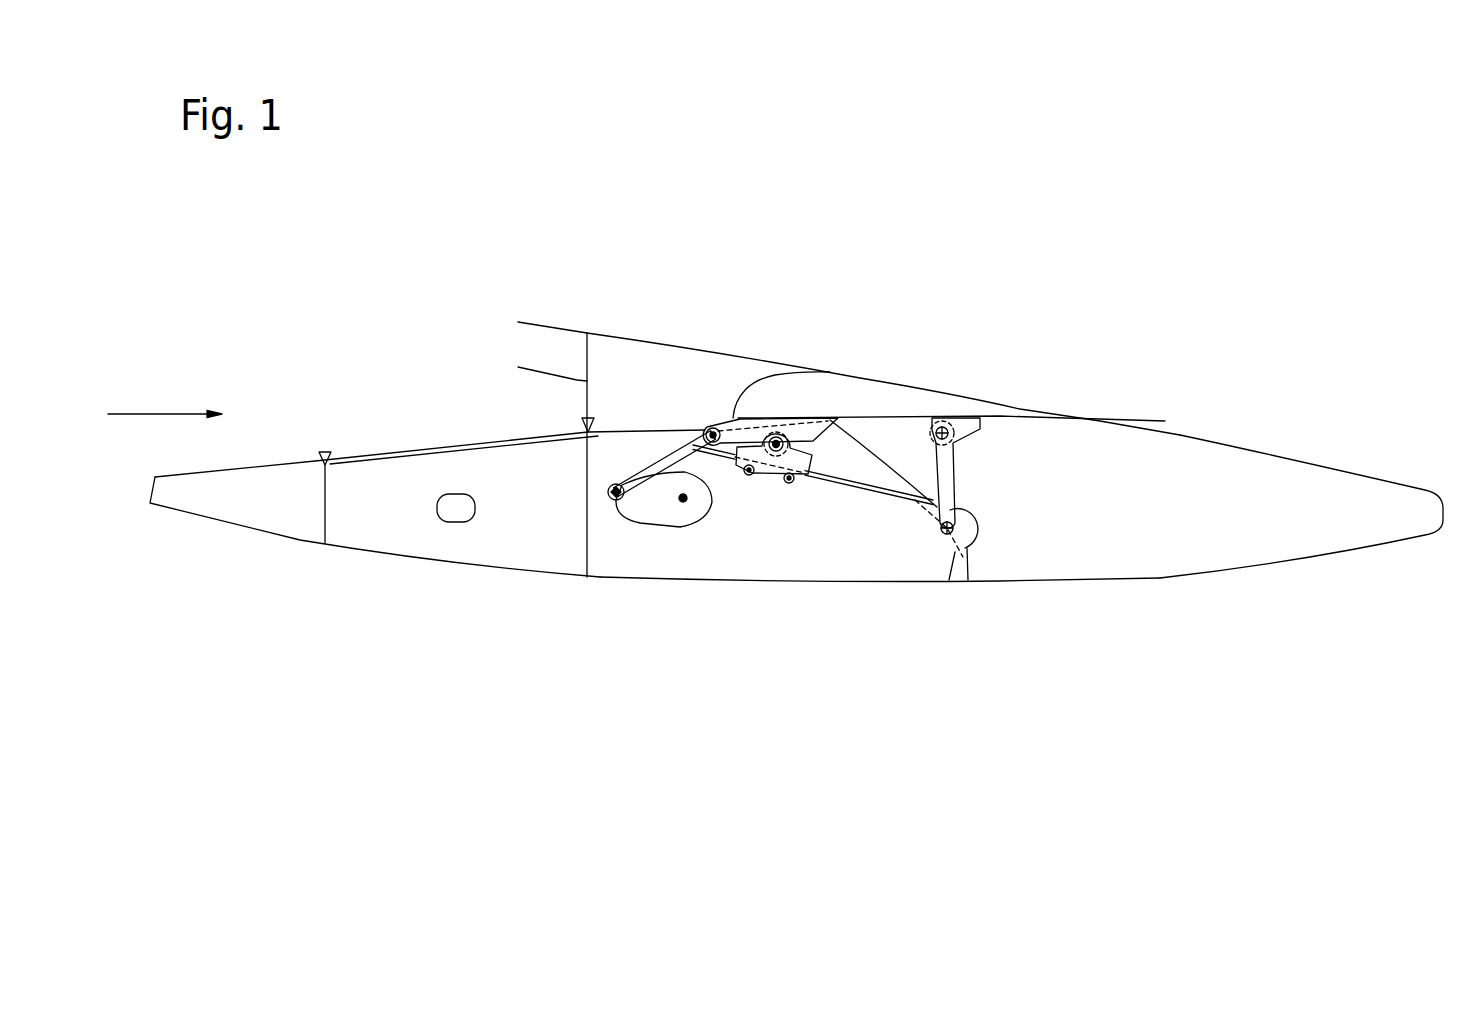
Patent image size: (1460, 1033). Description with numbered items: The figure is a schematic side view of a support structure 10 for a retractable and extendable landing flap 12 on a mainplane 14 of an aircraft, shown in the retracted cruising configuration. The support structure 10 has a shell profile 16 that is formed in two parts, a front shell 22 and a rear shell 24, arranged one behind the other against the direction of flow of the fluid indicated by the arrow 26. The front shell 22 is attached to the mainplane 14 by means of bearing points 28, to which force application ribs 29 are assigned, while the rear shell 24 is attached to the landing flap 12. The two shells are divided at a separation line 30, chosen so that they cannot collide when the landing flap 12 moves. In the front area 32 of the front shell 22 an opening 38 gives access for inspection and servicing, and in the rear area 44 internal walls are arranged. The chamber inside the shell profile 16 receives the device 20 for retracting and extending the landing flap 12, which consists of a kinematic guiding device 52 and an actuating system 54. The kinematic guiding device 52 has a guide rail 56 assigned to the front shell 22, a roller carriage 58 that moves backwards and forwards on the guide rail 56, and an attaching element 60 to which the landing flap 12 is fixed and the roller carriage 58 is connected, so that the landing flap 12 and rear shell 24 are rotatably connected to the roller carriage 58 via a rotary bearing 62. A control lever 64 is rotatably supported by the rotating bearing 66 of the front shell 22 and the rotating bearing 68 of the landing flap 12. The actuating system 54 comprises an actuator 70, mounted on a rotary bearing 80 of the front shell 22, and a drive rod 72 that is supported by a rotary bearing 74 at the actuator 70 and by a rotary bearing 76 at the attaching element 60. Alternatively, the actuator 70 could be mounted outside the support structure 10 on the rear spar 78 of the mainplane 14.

The support structure 10 is at (1232, 270).
The landing flap 12 is at (907, 400).
The mainplane 14 is at (557, 328).
The shell profile 16 is at (1162, 697).
The device for retraction and extension of the landing flap 20 is at (737, 512).
The front shell 22 is at (354, 584).
The rear shell 24 is at (1273, 600).
The direction of flow of the fluid 26 is at (162, 414).
The bearing points 28 is at (585, 419).
The force application ribs 29 is at (325, 517).
The separation line 30 is at (968, 580).
The front area 32 is at (428, 545).
The opening 38 is at (455, 510).
The rear area 44 is at (913, 563).
The kinematic guiding device 52 is at (846, 303).
The actuating system 54 is at (635, 658).
The guide rail 56 is at (868, 487).
The roller carriage 58 is at (768, 480).
The attaching element 60 is at (750, 432).
The rotary bearing 62 is at (777, 437).
The control lever 64 is at (943, 482).
The rotating bearing of the front shell 66 is at (950, 536).
The rotating bearing of the landing flap 68 is at (950, 425).
The actuator 70 is at (643, 512).
The drive rod 72 is at (660, 462).
The rotary bearing 74 is at (614, 500).
The rotary bearing 76 is at (711, 428).
The rear spar 78 is at (518, 366).
The rotary bearing 80 is at (683, 502).